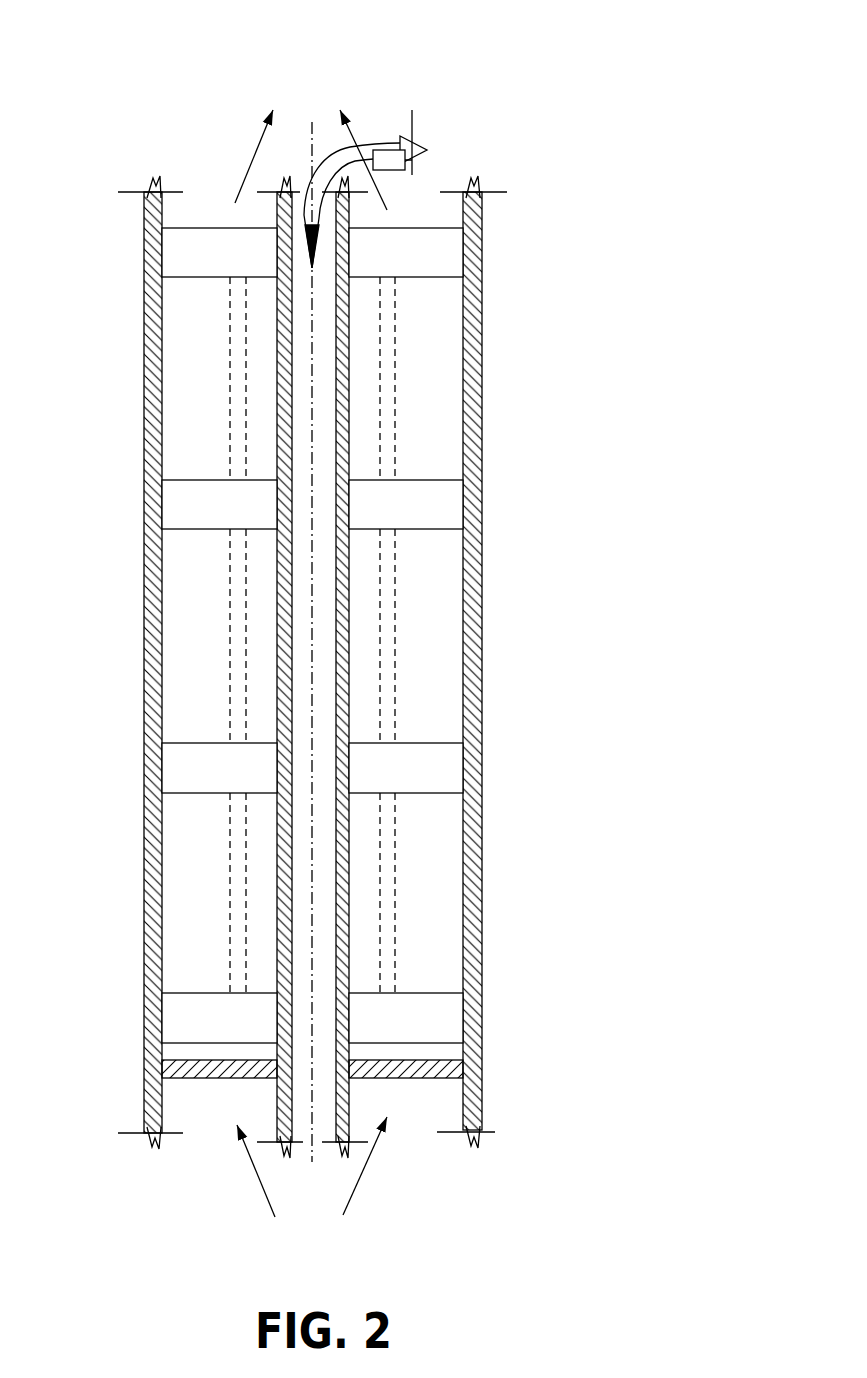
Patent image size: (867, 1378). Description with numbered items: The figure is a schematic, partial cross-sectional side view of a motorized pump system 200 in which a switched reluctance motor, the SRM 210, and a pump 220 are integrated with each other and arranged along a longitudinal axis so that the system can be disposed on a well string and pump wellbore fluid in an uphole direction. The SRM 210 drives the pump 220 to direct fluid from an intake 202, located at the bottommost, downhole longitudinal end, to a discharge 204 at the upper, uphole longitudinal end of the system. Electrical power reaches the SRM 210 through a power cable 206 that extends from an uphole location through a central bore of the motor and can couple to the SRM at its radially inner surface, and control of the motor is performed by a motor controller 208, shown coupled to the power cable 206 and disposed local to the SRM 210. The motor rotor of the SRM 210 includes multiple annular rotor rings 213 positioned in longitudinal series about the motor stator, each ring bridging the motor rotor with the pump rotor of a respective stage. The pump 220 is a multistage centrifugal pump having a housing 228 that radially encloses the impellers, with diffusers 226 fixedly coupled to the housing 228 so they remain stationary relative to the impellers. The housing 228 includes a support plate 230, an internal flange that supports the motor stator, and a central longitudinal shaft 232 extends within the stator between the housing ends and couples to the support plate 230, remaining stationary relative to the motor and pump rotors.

The motorized pump system 200 is at (372, 631).
The intake 202 is at (213, 1143).
The discharge 204 is at (218, 163).
The power cable 206 is at (390, 137).
The motor controller 208 is at (413, 163).
The SRM 210 is at (362, 347).
The annular rotor rings 213 is at (230, 387).
The pump 220 is at (438, 403).
The diffuser 226 is at (443, 257).
The housing 228 is at (475, 670).
The support plate 230 is at (427, 1078).
The central longitudinal shaft 232 is at (355, 872).